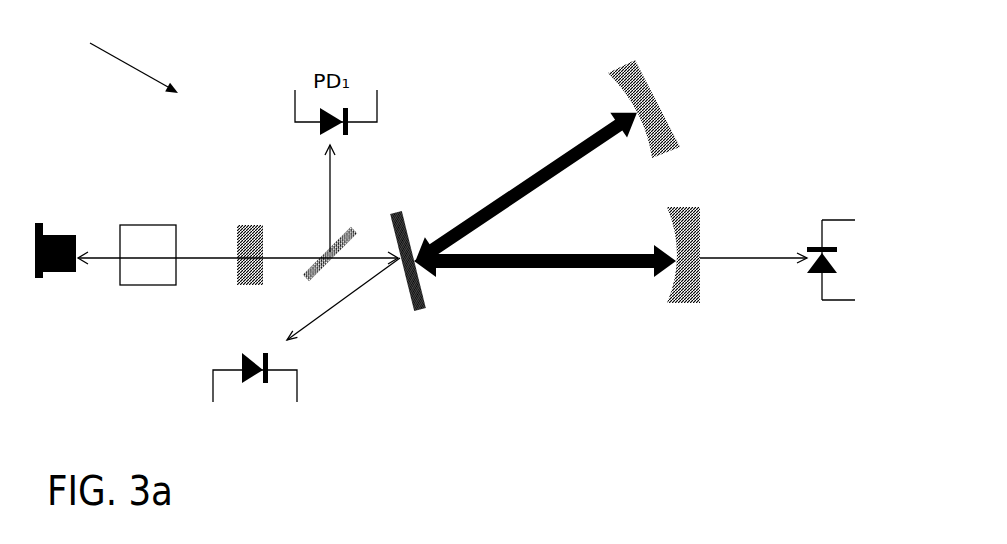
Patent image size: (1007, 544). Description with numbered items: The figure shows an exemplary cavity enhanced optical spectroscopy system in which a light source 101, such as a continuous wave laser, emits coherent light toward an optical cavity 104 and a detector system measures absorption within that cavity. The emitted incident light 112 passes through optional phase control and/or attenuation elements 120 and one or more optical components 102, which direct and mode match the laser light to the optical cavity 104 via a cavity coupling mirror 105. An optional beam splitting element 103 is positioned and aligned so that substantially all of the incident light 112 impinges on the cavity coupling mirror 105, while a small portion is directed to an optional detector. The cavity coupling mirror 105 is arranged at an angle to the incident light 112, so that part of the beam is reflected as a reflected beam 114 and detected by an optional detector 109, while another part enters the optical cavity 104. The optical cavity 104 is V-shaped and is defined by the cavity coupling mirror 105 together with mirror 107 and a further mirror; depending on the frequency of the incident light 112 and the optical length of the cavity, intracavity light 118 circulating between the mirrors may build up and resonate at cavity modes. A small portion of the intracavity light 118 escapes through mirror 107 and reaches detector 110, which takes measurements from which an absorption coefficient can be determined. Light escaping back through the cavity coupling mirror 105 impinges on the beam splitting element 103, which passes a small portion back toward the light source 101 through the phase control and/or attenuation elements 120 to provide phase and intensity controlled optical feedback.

The light source 101 is at (40, 237).
The phase control and/or attenuation elements 120 is at (143, 220).
The optical components 102 is at (255, 220).
The beam splitting element 103 is at (376, 208).
The incident light 112 is at (206, 270).
The reflected beam 114 is at (370, 303).
The detector 109 is at (290, 390).
The cavity coupling mirror 105 is at (430, 310).
The mirror 107 is at (681, 308).
The optical cavity 104 is at (543, 167).
The intracavity light 118 is at (545, 281).
The detector 110 is at (800, 315).